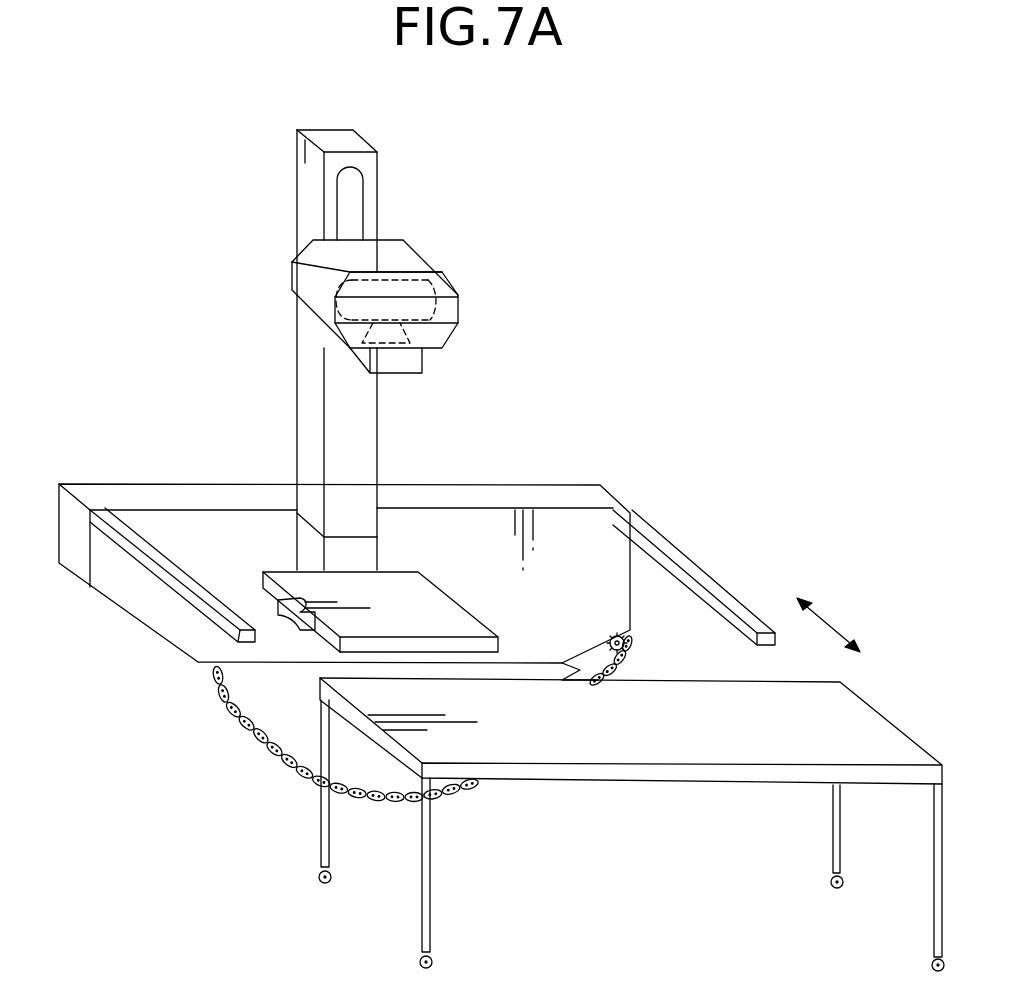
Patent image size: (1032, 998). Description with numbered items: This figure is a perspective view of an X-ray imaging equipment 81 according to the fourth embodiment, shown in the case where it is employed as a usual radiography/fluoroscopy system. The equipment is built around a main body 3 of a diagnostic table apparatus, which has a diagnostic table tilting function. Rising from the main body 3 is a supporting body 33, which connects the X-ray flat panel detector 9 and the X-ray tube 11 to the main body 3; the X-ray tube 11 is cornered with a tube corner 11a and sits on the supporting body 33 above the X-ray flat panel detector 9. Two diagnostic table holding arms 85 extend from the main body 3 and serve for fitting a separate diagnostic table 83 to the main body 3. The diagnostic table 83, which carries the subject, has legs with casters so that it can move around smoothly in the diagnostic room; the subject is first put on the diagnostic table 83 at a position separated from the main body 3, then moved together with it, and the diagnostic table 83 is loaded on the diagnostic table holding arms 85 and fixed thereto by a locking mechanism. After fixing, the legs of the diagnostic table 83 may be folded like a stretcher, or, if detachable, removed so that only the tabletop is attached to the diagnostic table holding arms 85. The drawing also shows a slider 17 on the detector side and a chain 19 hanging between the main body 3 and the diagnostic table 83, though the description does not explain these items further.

The main body of the diagnostic table apparatus 3 is at (115, 598).
The X-ray flat panel detector 9 is at (328, 638).
The X-ray tube 11 is at (433, 308).
The tube corner 11a is at (423, 257).
The slider 17 is at (278, 603).
The chain 19 is at (287, 732).
The supporting body 33 is at (296, 385).
The X-ray imaging equipment 81 is at (608, 287).
The diagnostic table 83 is at (922, 773).
The diagnostic table holding arms 85 is at (148, 546).